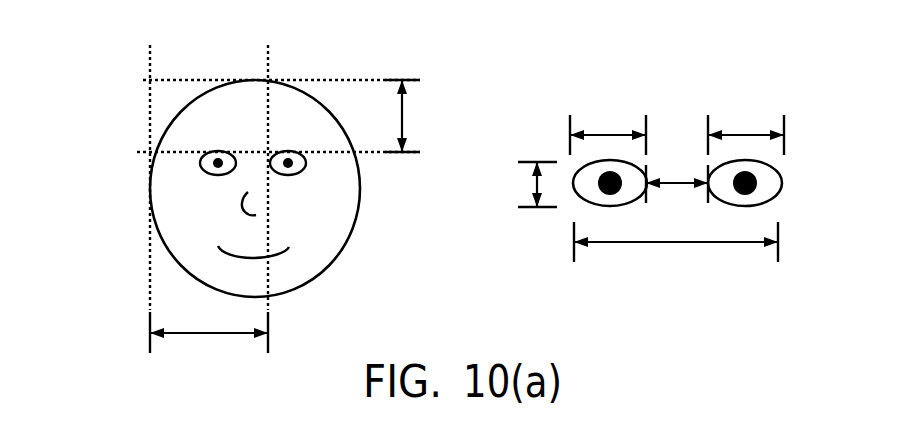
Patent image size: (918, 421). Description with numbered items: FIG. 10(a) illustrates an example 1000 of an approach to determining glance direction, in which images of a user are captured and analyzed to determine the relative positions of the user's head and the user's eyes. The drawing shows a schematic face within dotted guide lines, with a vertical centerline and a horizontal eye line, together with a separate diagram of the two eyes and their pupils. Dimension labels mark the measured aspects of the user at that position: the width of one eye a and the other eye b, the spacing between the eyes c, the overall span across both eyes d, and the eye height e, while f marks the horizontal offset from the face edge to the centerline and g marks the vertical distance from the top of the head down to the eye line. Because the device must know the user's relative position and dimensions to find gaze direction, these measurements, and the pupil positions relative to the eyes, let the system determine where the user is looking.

The example 1000 is at (78, 88).
The left eye width a is at (608, 158).
The right eye width b is at (746, 158).
The distance between eyes c is at (677, 180).
The outer eye span d is at (676, 239).
The eye height e is at (535, 184).
The face half width f is at (209, 331).
The forehead height g is at (402, 116).